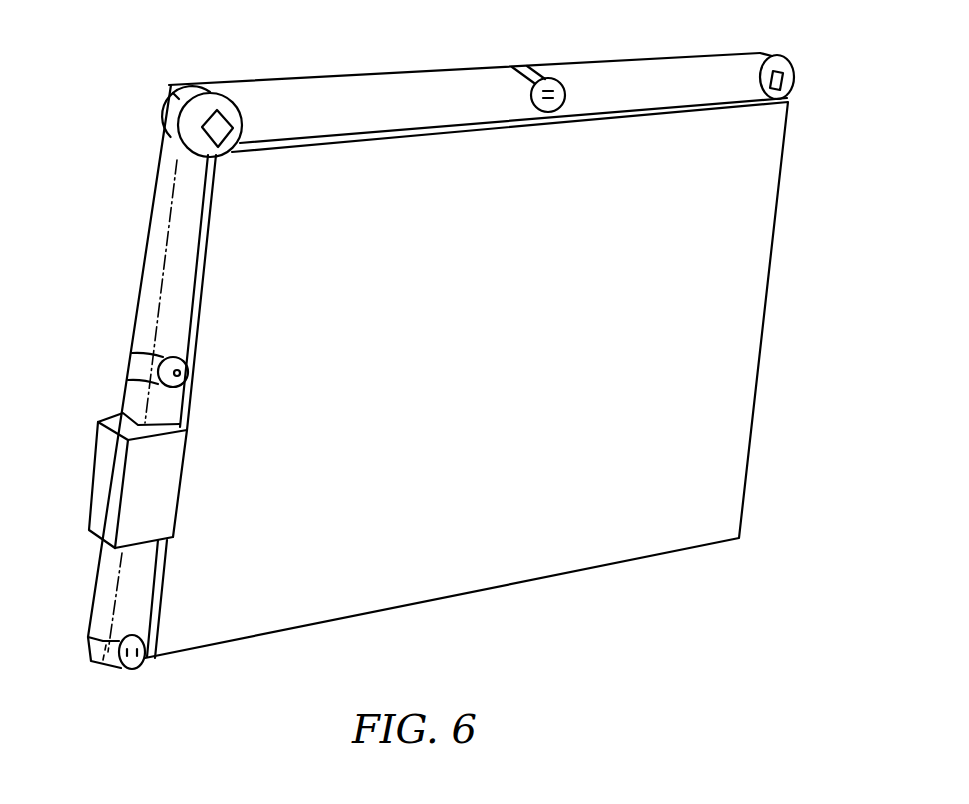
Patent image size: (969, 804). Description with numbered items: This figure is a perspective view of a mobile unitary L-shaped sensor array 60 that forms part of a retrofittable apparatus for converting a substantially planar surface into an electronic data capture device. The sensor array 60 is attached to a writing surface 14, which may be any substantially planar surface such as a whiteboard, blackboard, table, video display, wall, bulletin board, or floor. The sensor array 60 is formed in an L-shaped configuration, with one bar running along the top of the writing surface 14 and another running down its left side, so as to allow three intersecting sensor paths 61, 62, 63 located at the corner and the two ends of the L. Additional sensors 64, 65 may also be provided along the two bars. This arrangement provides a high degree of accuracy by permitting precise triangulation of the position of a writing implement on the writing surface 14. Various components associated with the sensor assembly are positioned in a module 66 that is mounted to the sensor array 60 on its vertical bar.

The writing surface 14 is at (466, 381).
The L-shaped sensor array 60 is at (437, 333).
The sensor path 61 is at (816, 77).
The sensor path 62 is at (234, 164).
The sensor path 63 is at (137, 685).
The additional sensor 64 is at (578, 63).
The additional sensor 65 is at (122, 332).
The module 66 is at (108, 458).